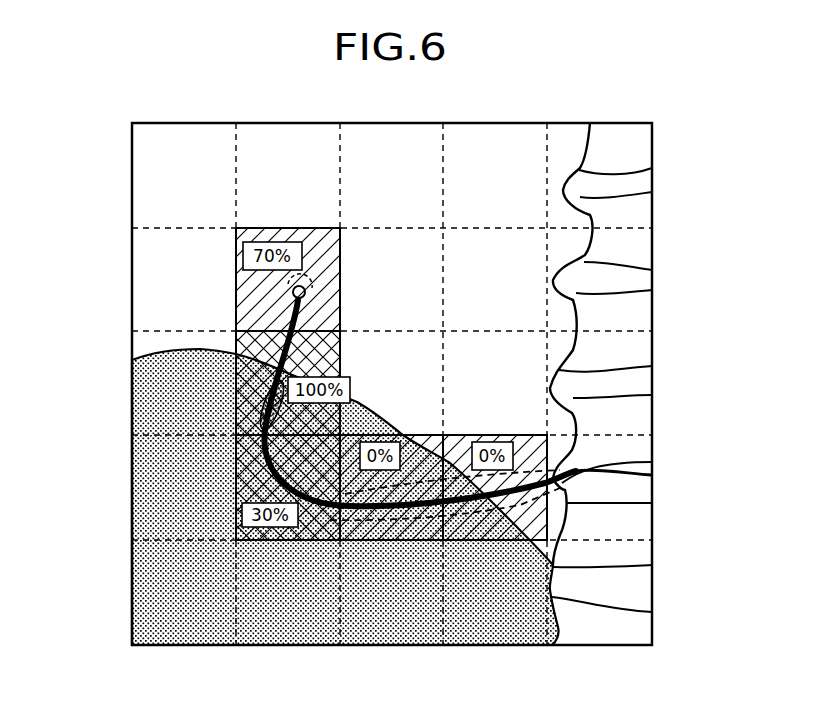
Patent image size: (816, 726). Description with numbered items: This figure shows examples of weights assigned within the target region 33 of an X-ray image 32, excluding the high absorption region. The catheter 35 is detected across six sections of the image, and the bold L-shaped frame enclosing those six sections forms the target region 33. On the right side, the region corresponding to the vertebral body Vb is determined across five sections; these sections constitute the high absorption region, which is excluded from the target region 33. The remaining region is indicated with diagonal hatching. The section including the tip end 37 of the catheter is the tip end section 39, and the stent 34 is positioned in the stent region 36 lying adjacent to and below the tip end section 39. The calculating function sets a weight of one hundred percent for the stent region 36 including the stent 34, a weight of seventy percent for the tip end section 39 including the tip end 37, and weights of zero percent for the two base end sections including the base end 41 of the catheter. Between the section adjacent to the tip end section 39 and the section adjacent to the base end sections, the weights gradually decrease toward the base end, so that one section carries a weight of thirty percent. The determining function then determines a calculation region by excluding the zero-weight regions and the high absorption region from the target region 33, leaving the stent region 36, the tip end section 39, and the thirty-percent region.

The X-ray image 32 is at (527, 123).
The target region 33 is at (228, 483).
The stent 34 is at (258, 408).
The catheter 35 is at (412, 505).
The stent region 36 is at (252, 341).
The tip end of the catheter 37 is at (300, 288).
The tip end section 39 is at (255, 292).
The base end of the catheter 41 is at (520, 512).
The vertebral body Vb is at (643, 210).